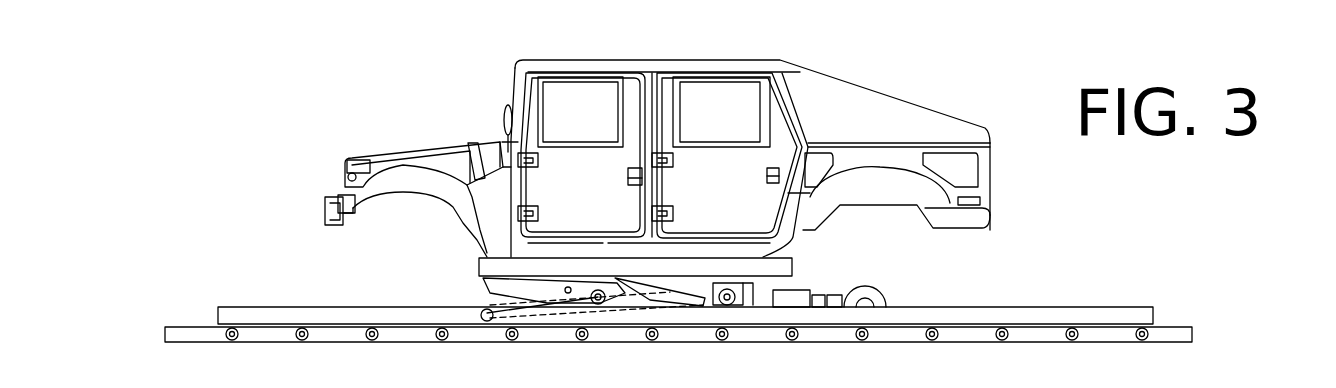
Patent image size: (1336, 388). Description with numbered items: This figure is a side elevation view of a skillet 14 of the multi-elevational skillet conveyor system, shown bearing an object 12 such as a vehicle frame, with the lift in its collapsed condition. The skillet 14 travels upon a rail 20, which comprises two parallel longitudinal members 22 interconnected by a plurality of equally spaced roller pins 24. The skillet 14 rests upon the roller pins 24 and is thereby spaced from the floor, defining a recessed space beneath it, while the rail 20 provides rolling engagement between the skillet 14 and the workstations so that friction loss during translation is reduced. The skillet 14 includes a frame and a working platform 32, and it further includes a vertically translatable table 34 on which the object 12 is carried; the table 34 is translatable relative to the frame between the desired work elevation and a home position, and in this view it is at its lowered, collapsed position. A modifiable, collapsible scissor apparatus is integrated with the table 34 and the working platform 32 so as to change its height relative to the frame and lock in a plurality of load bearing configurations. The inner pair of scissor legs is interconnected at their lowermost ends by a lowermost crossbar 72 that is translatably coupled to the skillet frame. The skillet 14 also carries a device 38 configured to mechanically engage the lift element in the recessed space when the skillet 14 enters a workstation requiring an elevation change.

The object 12 is at (474, 106).
The skillet 14 is at (275, 257).
The rail 20 is at (683, 290).
The longitudinal member 22 is at (1173, 333).
The roller pin 24 is at (1087, 327).
The working platform 32 is at (1003, 307).
The table 34 is at (480, 263).
The device 38 is at (868, 266).
The lowermost crossbar 72 is at (487, 318).